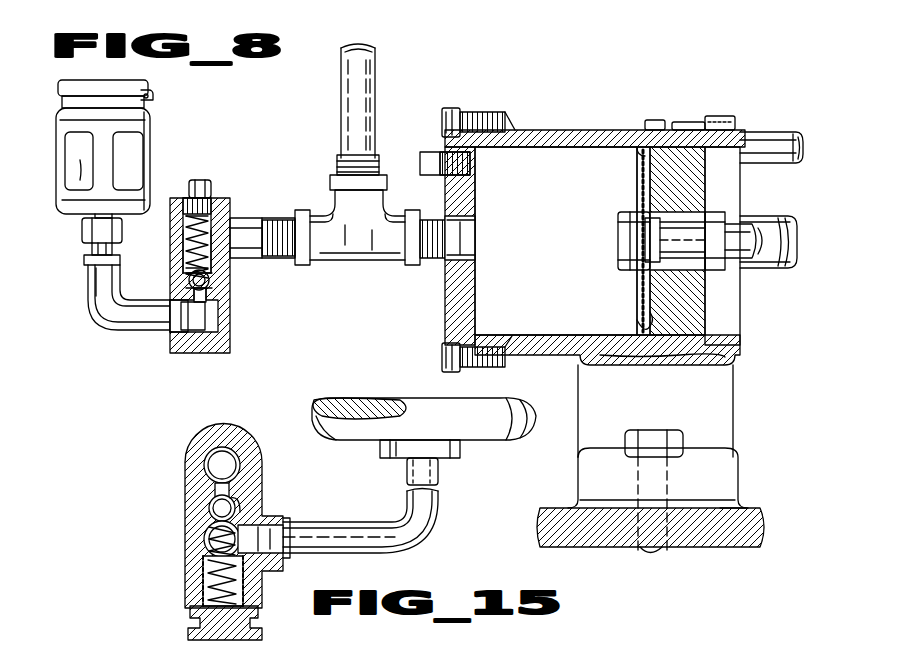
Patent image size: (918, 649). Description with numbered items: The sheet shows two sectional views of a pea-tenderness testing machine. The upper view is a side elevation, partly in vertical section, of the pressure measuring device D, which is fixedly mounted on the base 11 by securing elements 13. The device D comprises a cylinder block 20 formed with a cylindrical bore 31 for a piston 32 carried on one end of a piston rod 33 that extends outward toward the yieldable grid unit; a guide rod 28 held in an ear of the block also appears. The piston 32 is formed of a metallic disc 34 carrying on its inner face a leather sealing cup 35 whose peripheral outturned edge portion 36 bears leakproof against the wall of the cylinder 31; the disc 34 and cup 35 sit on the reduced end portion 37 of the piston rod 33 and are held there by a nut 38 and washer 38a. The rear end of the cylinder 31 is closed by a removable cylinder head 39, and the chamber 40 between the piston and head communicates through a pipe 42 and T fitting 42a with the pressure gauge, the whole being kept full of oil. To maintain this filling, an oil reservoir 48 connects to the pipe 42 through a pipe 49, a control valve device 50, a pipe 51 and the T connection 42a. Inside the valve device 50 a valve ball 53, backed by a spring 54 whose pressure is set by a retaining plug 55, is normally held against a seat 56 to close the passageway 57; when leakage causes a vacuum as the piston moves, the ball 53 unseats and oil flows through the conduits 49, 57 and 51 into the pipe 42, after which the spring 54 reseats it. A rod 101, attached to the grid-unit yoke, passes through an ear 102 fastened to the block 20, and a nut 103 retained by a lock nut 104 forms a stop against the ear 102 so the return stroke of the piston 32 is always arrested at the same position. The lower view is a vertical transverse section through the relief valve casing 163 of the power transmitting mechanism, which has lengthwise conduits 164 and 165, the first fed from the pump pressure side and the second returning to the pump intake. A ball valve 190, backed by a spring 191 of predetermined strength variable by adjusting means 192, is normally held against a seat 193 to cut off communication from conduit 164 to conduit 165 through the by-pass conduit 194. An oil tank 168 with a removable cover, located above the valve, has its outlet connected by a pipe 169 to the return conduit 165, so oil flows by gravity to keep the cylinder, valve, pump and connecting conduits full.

In FIG. 8, the oil reservoir 48 is at (137, 146).
In FIG. 8, the pipe 49 is at (118, 326).
In FIG. 8, the control valve device 50 is at (196, 350).
In FIG. 8, the pipe 51 is at (248, 226).
In FIG. 8, the valve ball 53 is at (210, 284).
In FIG. 8, the spring 54 is at (186, 238).
In FIG. 8, the retaining plug 55 is at (200, 178).
In FIG. 8, the seat 56 is at (194, 296).
In FIG. 8, the passageway 57 is at (186, 258).
In FIG. 8, the pipe 42 is at (368, 108).
In FIG. 8, the T fitting 42a is at (332, 258).
In FIG. 8, the cylinder head 39 is at (452, 306).
In FIG. 8, the cylinder block 20 is at (580, 130).
In FIG. 8, the pressure measuring device D is at (547, 125).
In FIG. 8, the cylindrical bore 31 is at (548, 146).
In FIG. 8, the chamber 40 is at (556, 241).
In FIG. 8, the leather sealing cup 35 is at (648, 184).
In FIG. 8, the peripheral outturned edge portion 36 is at (640, 154).
In FIG. 8, the metallic disc 34 is at (677, 241).
In FIG. 8, the piston 32 is at (692, 186).
In FIG. 8, the washer 38a is at (647, 294).
In FIG. 8, the nut 38 is at (628, 258).
In FIG. 8, the reduced end portion 37 is at (685, 241).
In FIG. 8, the piston rod 33 is at (746, 230).
In FIG. 8, the guide rod 28 is at (778, 270).
In FIG. 8, the rod 101 is at (766, 140).
In FIG. 8, the lock nut 104 is at (650, 120).
In FIG. 8, the nut 103 is at (688, 120).
In FIG. 8, the ear 102 is at (722, 118).
In FIG. 8, the base 11 is at (742, 514).
In FIG. 8, the securing elements 13 is at (676, 444).
In FIG. 15, the casing 163 is at (205, 446).
In FIG. 15, the conduit 164 is at (225, 466).
In FIG. 15, the by-pass conduit 194 is at (215, 490).
In FIG. 15, the ball valve 190 is at (210, 508).
In FIG. 15, the seat 193 is at (238, 508).
In FIG. 15, the conduit 165 is at (208, 541).
In FIG. 15, the spring 191 is at (210, 582).
In FIG. 15, the adjusting means 192 is at (208, 622).
In FIG. 15, the tank 168 is at (424, 441).
In FIG. 15, the pipe 169 is at (340, 540).